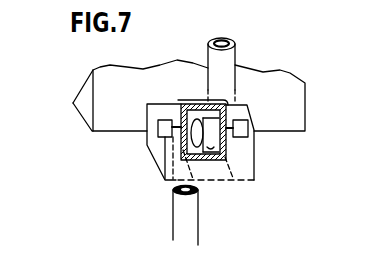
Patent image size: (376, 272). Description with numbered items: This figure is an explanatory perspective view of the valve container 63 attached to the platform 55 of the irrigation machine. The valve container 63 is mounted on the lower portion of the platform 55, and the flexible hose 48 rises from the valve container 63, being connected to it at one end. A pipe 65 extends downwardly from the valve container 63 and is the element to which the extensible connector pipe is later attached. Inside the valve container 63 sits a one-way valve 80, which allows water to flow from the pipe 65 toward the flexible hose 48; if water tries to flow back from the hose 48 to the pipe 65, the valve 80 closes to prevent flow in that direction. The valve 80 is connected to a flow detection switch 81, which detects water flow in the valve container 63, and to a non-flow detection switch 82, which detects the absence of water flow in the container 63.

The flexible hose 48 is at (231, 54).
The platform 55 is at (291, 91).
The valve container 63 is at (243, 168).
The pipe 65 is at (191, 228).
The one-way valve 80 is at (215, 155).
The flow detection switch 81 is at (249, 131).
The non-flow detection switch 82 is at (160, 140).